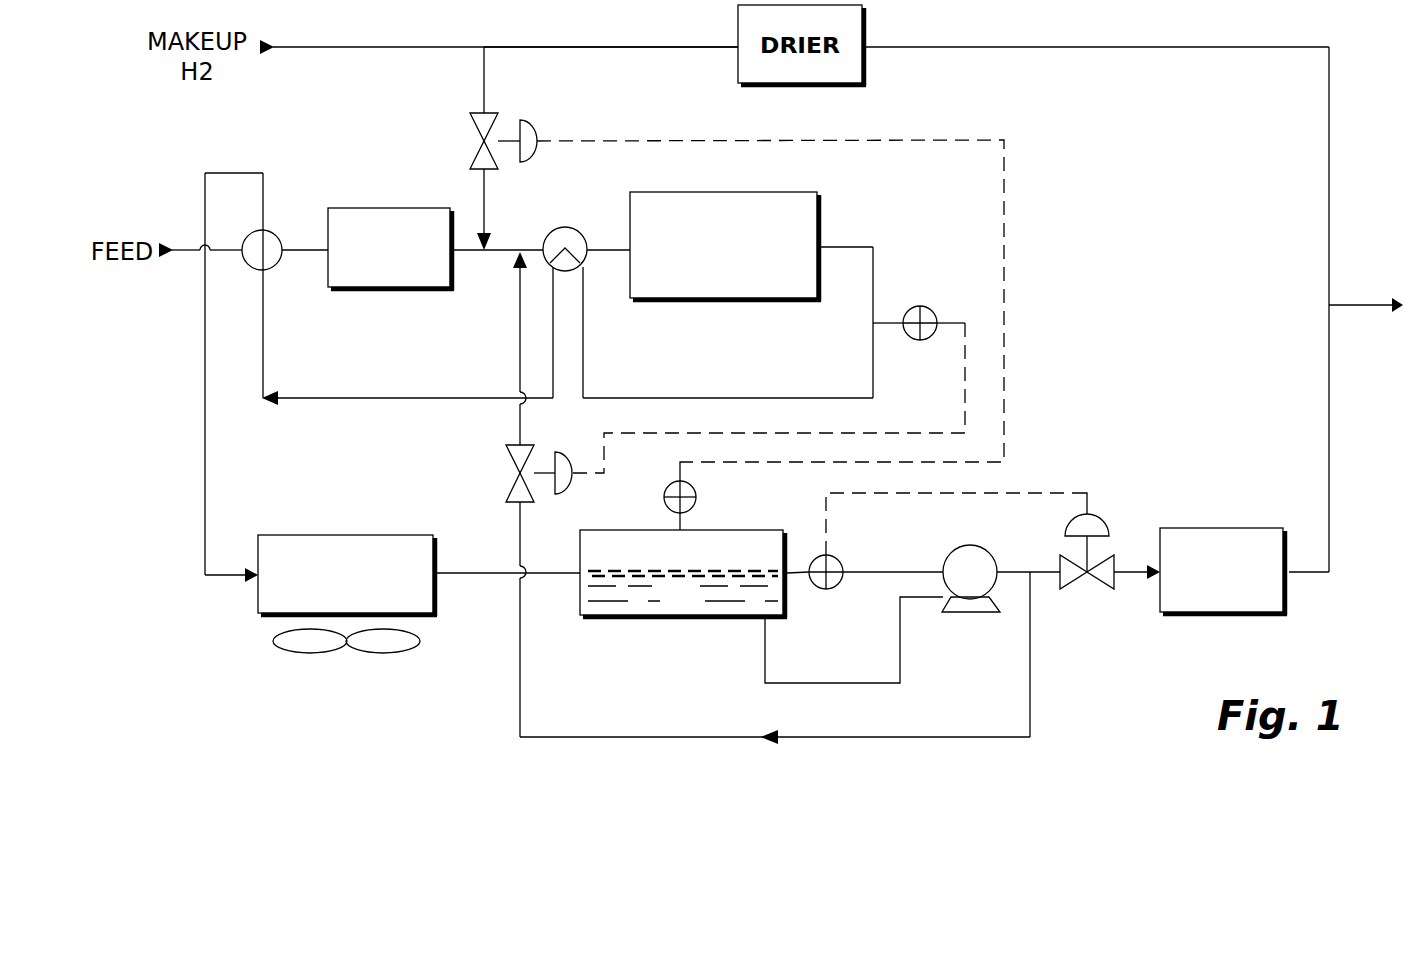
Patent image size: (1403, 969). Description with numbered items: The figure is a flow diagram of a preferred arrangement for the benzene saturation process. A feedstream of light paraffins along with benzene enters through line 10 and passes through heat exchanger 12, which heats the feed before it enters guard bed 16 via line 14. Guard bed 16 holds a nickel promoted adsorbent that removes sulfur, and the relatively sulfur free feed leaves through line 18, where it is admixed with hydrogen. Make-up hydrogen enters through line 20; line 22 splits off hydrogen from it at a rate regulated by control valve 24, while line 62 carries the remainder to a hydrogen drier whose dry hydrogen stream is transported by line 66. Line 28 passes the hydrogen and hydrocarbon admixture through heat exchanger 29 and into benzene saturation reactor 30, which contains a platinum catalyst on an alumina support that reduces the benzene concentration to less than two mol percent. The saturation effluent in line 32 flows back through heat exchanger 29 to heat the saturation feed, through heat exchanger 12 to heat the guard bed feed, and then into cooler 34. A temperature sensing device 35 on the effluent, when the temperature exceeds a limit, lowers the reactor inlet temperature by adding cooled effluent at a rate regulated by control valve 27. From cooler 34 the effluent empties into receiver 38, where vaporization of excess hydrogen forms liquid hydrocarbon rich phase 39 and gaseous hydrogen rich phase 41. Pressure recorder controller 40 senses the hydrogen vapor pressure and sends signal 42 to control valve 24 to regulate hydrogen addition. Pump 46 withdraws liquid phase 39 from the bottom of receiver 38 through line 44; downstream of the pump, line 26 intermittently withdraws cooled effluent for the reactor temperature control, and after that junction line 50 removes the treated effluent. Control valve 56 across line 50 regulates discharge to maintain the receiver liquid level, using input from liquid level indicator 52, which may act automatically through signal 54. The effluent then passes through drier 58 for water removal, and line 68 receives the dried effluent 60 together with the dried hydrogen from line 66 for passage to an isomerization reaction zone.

The line 10 is at (192, 249).
The heat exchanger 12 is at (282, 241).
The line 14 is at (300, 253).
The guard bed 16 is at (402, 180).
The line 18 is at (466, 252).
The line 20 is at (396, 46).
The line 22 is at (487, 78).
The control valve 24 is at (466, 128).
The line 26 is at (519, 352).
The control valve 27 is at (512, 464).
The line 28 is at (509, 246).
The heat exchanger 29 is at (566, 227).
The benzene saturation reactor 30 is at (821, 207).
The line 32 is at (874, 272).
The cooler 34 is at (334, 535).
The effluent analyzer 35 is at (926, 307).
The receiver 38 is at (602, 616).
The liquid hydrocarbon rich phase 39 is at (683, 592).
The pressure recorder controller 40 is at (697, 496).
The gaseous hydrogen rich phase 41 is at (682, 552).
The signal 42 is at (1006, 248).
The line 44 is at (1016, 575).
The pump 46 is at (943, 567).
The line 50 is at (1040, 570).
The liquid level indicator 52 is at (840, 584).
The signal 54 is at (1070, 492).
The control valve 56 is at (1116, 560).
The drier 58 is at (1228, 528).
The dried effluent 60 is at (1331, 446).
The line 62 is at (546, 46).
The line 66 is at (1331, 146).
The line 68 is at (1368, 304).